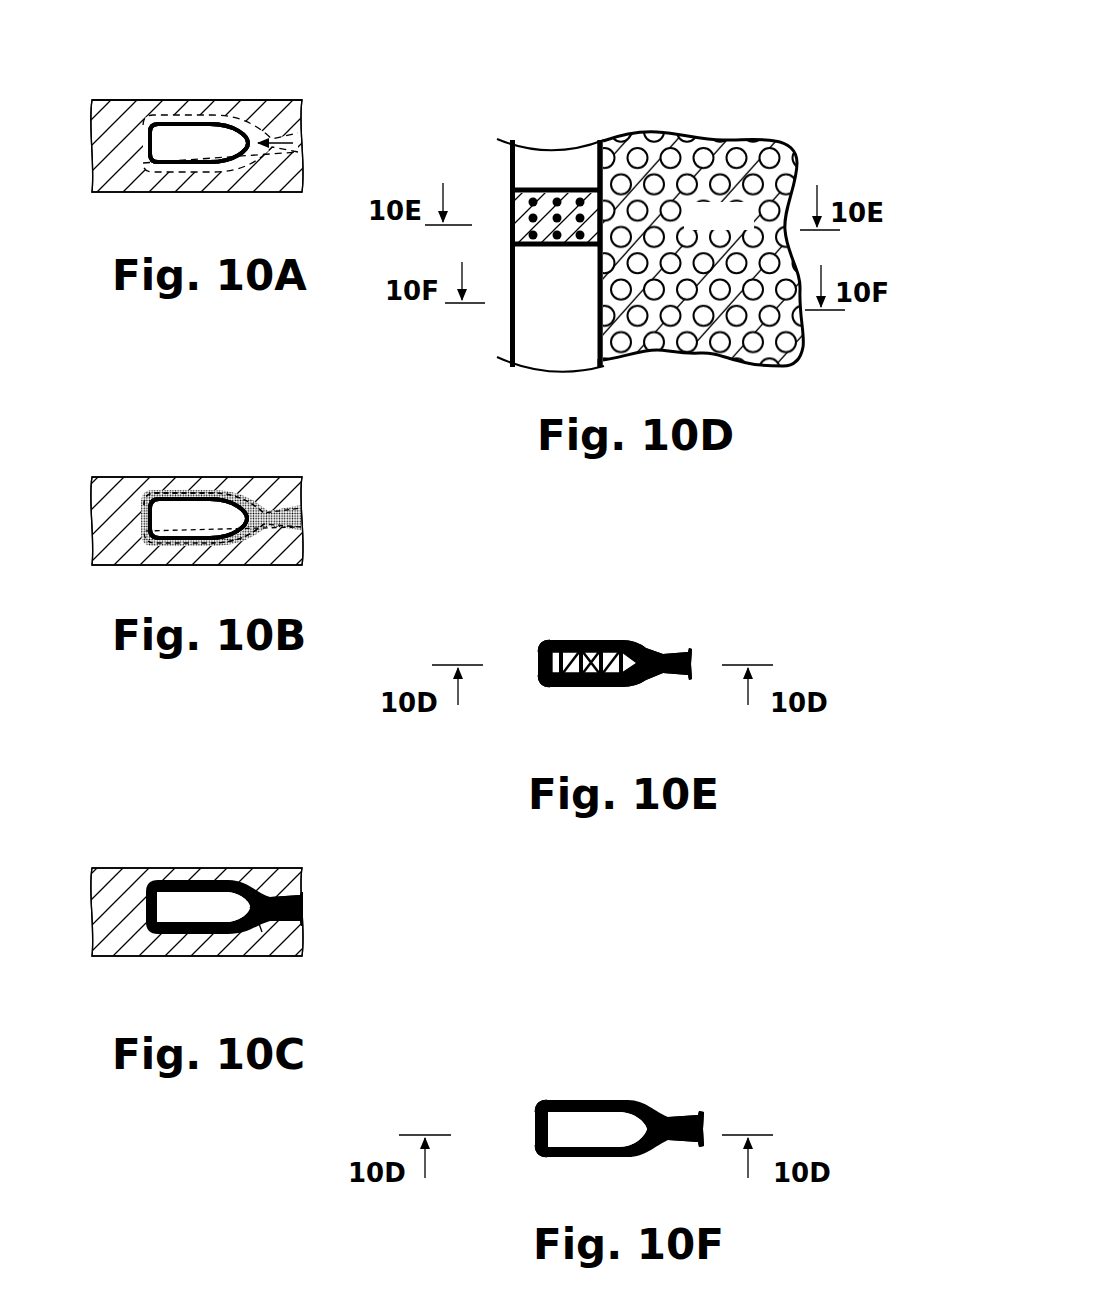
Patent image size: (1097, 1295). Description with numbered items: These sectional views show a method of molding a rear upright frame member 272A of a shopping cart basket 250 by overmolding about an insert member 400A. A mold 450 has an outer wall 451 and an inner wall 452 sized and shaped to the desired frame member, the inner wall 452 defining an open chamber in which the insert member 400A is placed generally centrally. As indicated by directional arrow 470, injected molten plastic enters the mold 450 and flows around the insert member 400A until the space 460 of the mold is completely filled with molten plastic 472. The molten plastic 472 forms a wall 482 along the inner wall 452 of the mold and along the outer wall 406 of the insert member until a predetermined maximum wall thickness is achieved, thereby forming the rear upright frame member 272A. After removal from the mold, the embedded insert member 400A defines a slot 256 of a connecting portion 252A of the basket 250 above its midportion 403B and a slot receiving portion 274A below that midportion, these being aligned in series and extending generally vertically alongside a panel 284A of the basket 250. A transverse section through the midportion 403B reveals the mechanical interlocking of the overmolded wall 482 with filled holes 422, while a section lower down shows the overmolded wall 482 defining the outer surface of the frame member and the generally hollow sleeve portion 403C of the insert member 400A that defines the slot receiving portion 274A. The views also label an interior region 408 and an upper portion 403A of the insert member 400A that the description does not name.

In FIG. 10A, the mold 450 is at (103, 95).
In FIG. 10B, the mold 450 is at (103, 474).
In FIG. 10C, the mold 450 is at (103, 865).
In FIG. 10A, the outer wall 451 is at (131, 100).
In FIG. 10A, the inner wall 452 is at (188, 115).
In FIG. 10B, the inner wall 452 is at (205, 490).
In FIG. 10A, the outer wall of insert member 406 is at (161, 122).
In FIG. 10B, the outer wall of insert member 406 is at (161, 498).
In FIG. 10A, the channel interior 408 is at (186, 141).
In FIG. 10B, the channel interior 408 is at (195, 541).
In FIG. 10C, the channel interior 408 is at (208, 912).
In FIG. 10A, the insert member 400A is at (196, 166).
In FIG. 10B, the insert member 400A is at (147, 543).
In FIG. 10C, the insert member 400A is at (164, 935).
In FIG. 10D, the insert member 400A is at (504, 212).
In FIG. 10E, the insert member 400A is at (565, 638).
In FIG. 10A, the directional arrow 470 is at (279, 149).
In FIG. 10B, the space 460 is at (270, 497).
In FIG. 10B, the molten plastic 472 is at (256, 532).
In FIG. 10C, the molten plastic 472 is at (268, 928).
In FIG. 10C, the wall 482 is at (194, 880).
In FIG. 10D, the wall 482 is at (505, 350).
In FIG. 10E, the wall 482 is at (601, 640).
In FIG. 10F, the wall 482 is at (607, 1100).
In FIG. 10C, the panel 284A is at (290, 902).
In FIG. 10D, the panel 284A is at (748, 226).
In FIG. 10E, the panel 284A is at (664, 651).
In FIG. 10F, the panel 284A is at (678, 1117).
In FIG. 10D, the basket 250 is at (704, 130).
In FIG. 10D, the connecting portion 252A is at (499, 141).
In FIG. 10D, the slot 256 is at (541, 151).
In FIG. 10D, the rear upright frame member 272A is at (503, 325).
In FIG. 10E, the rear upright frame member 272A is at (536, 664).
In FIG. 10F, the rear upright frame member 272A is at (533, 1134).
In FIG. 10D, the slot receiving portion 274A is at (552, 352).
In FIG. 10F, the slot receiving portion 274A is at (575, 1140).
In FIG. 10D, the upper channel segment 403A is at (586, 184).
In FIG. 10D, the midportion 403B is at (516, 224).
In FIG. 10E, the midportion 403B is at (622, 690).
In FIG. 10D, the hollow sleeve portion 403C is at (586, 294).
In FIG. 10F, the hollow sleeve portion 403C is at (565, 1118).
In FIG. 10E, the filled holes 422 is at (588, 690).